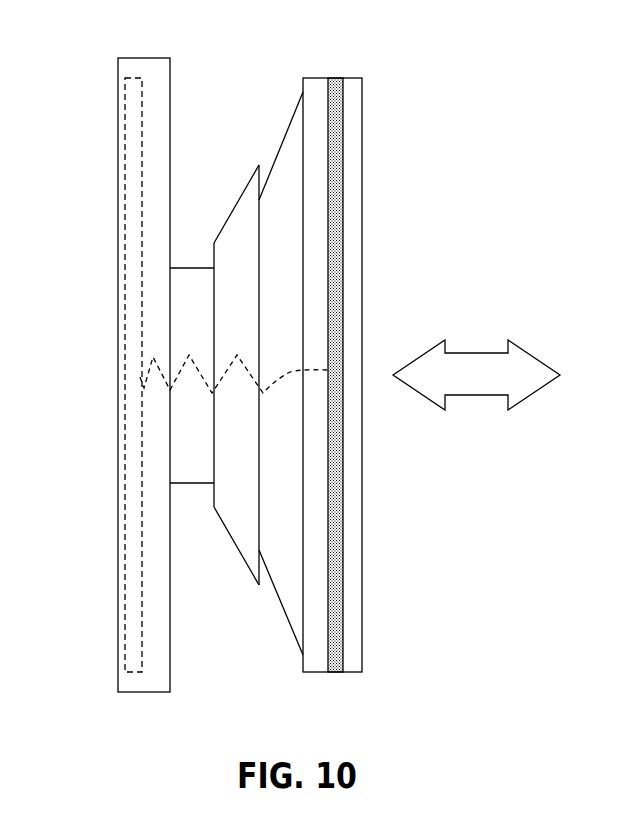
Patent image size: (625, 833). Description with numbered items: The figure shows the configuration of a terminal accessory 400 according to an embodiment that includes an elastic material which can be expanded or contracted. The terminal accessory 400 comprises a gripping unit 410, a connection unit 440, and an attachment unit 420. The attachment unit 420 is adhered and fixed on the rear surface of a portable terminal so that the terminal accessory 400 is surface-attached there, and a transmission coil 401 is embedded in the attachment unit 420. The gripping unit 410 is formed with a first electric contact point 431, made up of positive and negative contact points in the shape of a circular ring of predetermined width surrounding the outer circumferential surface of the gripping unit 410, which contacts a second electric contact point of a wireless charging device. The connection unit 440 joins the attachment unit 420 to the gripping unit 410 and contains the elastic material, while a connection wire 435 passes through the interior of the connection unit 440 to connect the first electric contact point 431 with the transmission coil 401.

The terminal accessory 400 is at (68, 55).
The transmission coil 401 is at (138, 672).
The gripping unit 410 is at (362, 488).
The attachment unit 420 is at (118, 467).
The first electric contact point 431 is at (334, 672).
The connection wire 435 is at (253, 383).
The connection unit 440 is at (233, 220).